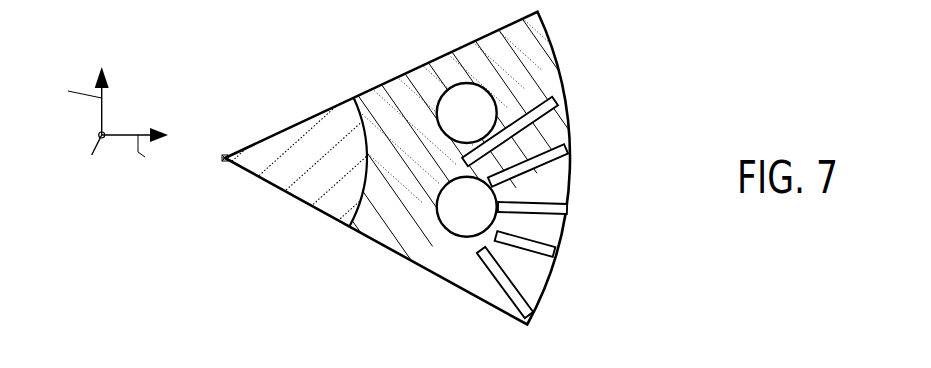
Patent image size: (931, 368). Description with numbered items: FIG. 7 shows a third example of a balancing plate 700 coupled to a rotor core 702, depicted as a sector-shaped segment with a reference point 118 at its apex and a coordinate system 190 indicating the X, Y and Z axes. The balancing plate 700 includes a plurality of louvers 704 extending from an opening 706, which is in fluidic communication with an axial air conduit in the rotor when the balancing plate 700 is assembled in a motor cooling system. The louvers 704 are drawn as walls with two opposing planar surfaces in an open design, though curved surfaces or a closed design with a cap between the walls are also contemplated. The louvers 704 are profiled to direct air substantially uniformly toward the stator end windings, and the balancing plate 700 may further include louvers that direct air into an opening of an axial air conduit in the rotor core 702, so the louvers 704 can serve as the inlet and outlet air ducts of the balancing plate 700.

The balancing plate 700 is at (392, 53).
The rotor core 702 is at (284, 112).
The louvers 704 is at (527, 113).
The opening 706 is at (451, 216).
The apex point / axis 118 is at (226, 155).
The coordinate system 190 is at (143, 94).